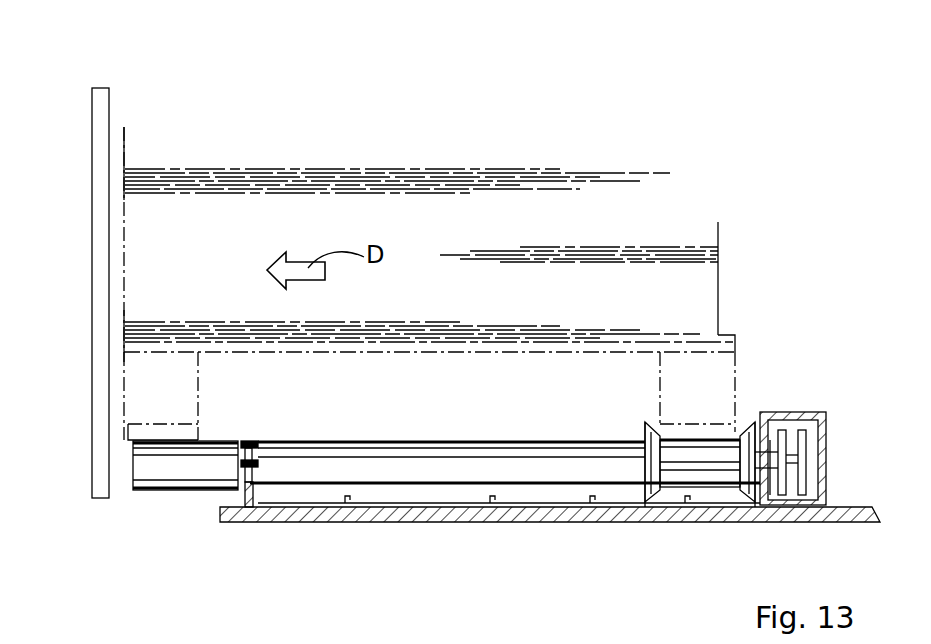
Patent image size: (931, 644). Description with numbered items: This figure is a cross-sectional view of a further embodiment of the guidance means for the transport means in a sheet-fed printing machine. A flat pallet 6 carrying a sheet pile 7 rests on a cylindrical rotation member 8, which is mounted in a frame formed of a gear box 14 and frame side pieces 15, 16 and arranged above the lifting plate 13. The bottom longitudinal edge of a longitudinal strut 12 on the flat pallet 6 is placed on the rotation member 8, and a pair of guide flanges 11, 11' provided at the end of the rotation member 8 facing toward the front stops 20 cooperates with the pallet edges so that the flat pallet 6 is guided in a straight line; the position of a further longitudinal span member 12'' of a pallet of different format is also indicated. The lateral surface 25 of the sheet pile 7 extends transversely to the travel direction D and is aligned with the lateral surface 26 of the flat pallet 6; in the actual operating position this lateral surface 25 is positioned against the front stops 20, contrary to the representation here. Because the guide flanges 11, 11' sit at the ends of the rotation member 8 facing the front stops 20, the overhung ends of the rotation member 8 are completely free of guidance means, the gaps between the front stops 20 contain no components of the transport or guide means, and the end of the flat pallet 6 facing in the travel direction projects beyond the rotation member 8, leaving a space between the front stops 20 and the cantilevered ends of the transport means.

The front stops 20 is at (100, 118).
The lateral surface of the sheet pile 25 is at (124, 244).
The lateral surface of the flat pallet 26 is at (124, 361).
The sheet pile 7 is at (700, 293).
The flat pallet 6 is at (500, 370).
The longitudinal strut 12 is at (139, 421).
The longitudinal span member 12'' is at (748, 378).
The frame side piece 16 is at (250, 440).
The rotation member 8 is at (568, 456).
The frame side piece 15 is at (407, 492).
The guide flange 11' is at (644, 497).
The guide flange 11 is at (733, 497).
The gear box 14 is at (798, 412).
The lifting plate 13 is at (855, 513).